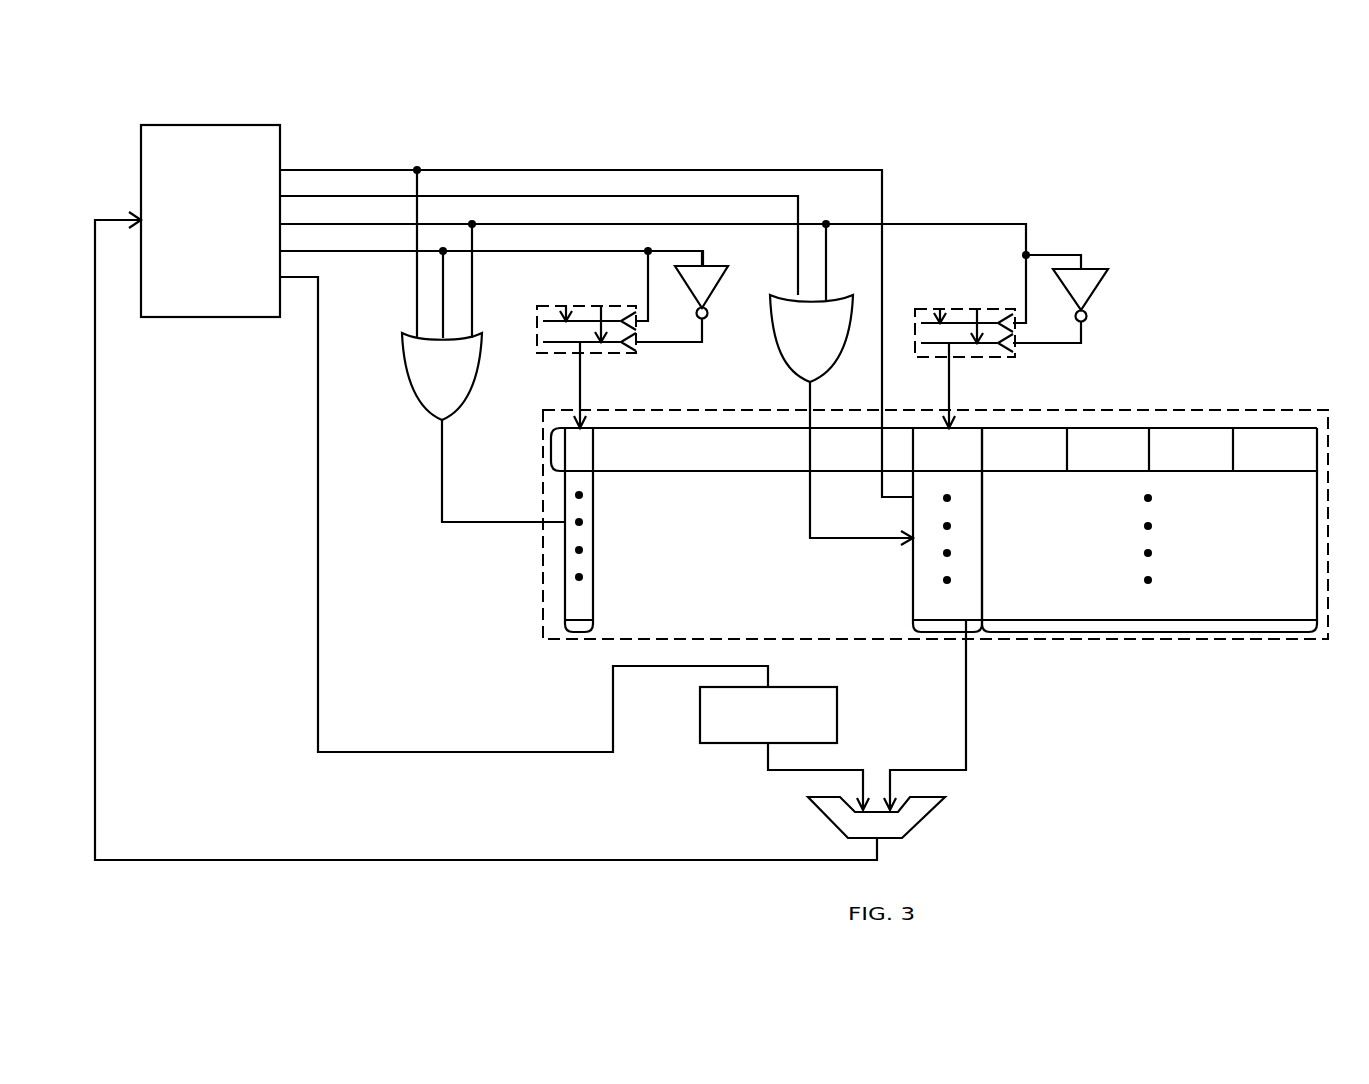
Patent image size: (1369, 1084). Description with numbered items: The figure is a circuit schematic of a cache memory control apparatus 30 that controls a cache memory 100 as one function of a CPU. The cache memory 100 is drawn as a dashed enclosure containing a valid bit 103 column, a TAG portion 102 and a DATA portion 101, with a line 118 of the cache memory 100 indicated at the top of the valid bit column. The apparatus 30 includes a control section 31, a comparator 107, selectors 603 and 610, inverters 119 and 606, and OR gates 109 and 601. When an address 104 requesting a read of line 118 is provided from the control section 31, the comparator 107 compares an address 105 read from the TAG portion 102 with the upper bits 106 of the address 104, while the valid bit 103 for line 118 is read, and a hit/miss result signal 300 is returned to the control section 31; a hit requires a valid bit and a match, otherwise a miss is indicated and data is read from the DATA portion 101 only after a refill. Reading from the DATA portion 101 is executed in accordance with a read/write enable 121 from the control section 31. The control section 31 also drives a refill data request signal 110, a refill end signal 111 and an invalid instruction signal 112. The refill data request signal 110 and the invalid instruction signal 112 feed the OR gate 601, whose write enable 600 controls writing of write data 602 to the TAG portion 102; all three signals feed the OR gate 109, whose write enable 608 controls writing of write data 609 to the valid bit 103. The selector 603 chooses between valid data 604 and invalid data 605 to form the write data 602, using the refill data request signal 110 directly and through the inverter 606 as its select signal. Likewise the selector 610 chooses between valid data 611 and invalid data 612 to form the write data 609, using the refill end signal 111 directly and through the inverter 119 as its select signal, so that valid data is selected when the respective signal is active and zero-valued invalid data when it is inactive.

The cache memory control apparatus 30 is at (980, 120).
The control section 31 is at (206, 318).
The cache memory 100 is at (1097, 645).
The DATA portion 101 is at (1154, 634).
The TAG portion 102 is at (953, 634).
The valid bit 103 is at (585, 634).
The address 104 is at (700, 716).
The address read from TAG portion 105 is at (966, 672).
The upper bits of address 106 is at (768, 757).
The comparator 107 is at (945, 822).
The OR gate 109 is at (422, 420).
The refill data request signal 110 is at (350, 222).
The refill end signal 111 is at (358, 254).
The invalid instruction signal 112 is at (308, 193).
The line 118 is at (551, 448).
The inverter 119 is at (712, 300).
The read/write enable 121 is at (883, 197).
The hit/miss result signal 300 is at (644, 860).
The write enable 600 is at (810, 514).
The OR gate 601 is at (852, 295).
The write data 602 is at (950, 380).
The selector 603 is at (922, 309).
The valid data 604 is at (944, 310).
The invalid data 605 is at (978, 310).
The inverter 606 is at (1096, 296).
The write enable 608 is at (474, 522).
The write data 609 is at (577, 377).
The selector 610 is at (540, 306).
The valid data 611 is at (568, 308).
The invalid data 612 is at (606, 308).